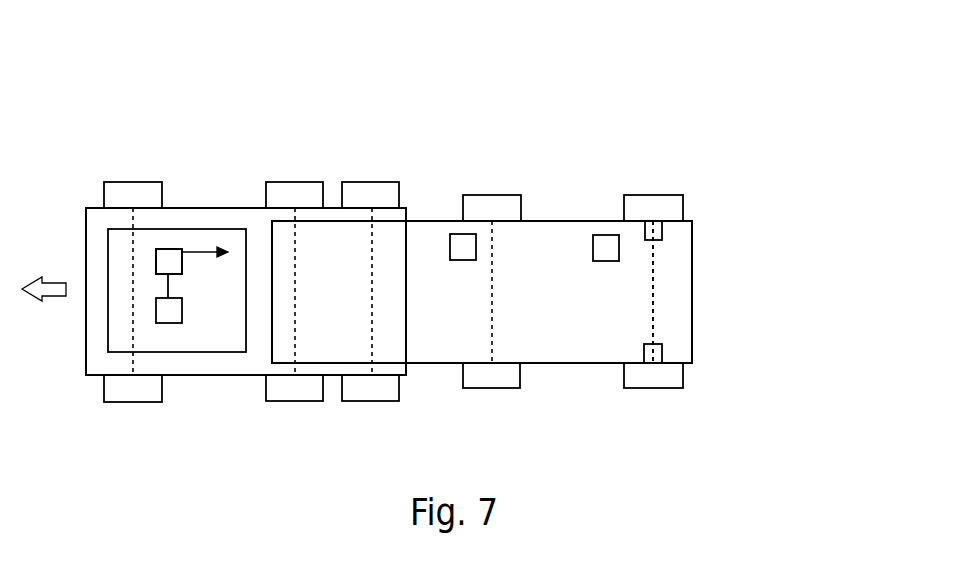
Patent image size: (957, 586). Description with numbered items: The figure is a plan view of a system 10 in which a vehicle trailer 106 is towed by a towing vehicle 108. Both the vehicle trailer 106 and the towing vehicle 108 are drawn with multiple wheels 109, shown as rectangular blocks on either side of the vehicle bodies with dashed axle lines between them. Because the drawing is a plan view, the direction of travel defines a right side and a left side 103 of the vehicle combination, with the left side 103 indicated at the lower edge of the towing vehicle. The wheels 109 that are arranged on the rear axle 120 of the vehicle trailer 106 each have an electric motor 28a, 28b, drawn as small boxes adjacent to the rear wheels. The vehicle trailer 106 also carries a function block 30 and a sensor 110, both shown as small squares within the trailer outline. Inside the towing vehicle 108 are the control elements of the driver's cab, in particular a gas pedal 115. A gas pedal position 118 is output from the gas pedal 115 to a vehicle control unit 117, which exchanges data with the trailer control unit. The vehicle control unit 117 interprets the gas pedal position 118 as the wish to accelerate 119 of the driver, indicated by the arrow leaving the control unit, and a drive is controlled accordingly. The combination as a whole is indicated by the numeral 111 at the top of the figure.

The system 10 is at (782, 222).
The electric motor 28a is at (662, 228).
The electric motor 28b is at (662, 352).
The function block 30 is at (600, 261).
The left side 103 is at (243, 403).
The vehicle trailer 106 is at (535, 221).
The towing vehicle 108 is at (207, 208).
The wheels 109 is at (130, 182).
The sensor 110 is at (460, 260).
The vehicle combination 111 is at (228, 108).
The gas pedal 115 is at (156, 310).
The vehicle control unit 117 is at (156, 258).
The gas pedal position 118 is at (168, 289).
The wish to accelerate 119 is at (208, 252).
The rear axle 120 is at (657, 287).